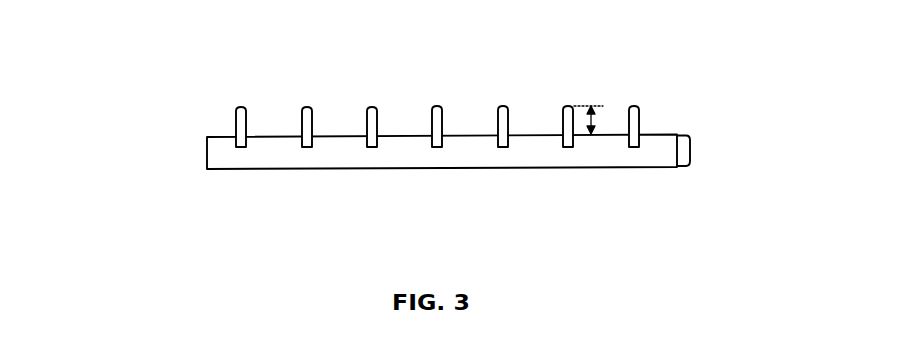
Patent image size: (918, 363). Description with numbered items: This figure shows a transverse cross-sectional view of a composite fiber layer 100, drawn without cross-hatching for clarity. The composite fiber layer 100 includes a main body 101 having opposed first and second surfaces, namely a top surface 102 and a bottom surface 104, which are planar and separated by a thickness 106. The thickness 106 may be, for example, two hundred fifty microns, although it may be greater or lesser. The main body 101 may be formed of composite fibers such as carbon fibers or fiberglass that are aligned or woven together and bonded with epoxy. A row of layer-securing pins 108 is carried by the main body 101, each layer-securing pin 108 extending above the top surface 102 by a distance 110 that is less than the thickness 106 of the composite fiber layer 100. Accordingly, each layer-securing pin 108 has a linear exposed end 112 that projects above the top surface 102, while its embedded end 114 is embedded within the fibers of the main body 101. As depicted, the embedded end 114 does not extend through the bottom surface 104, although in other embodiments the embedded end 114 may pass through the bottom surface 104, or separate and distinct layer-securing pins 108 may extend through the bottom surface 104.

The composite fiber layer 100 is at (152, 139).
The main body 101 is at (670, 116).
The top surface 102 is at (280, 133).
The bottom surface 104 is at (328, 168).
The thickness 106 is at (690, 149).
The layer-securing pin 108 is at (437, 106).
The distance 110 is at (596, 117).
The linear exposed end 112 is at (372, 106).
The embedded end 114 is at (247, 143).